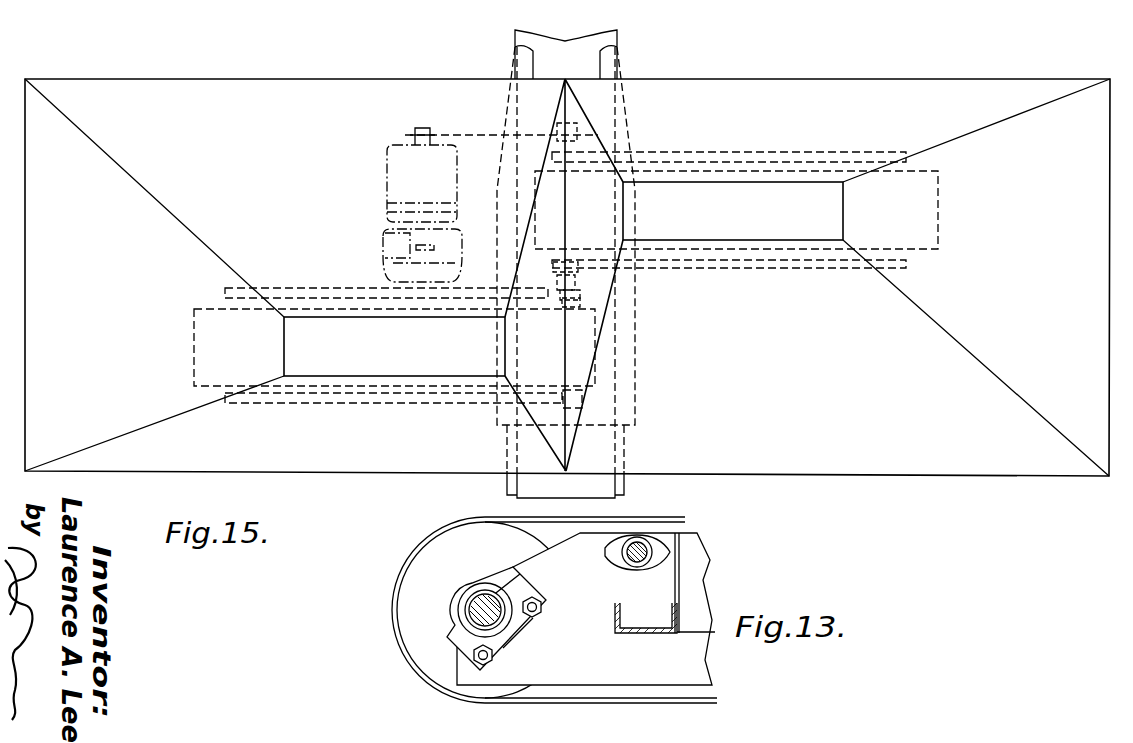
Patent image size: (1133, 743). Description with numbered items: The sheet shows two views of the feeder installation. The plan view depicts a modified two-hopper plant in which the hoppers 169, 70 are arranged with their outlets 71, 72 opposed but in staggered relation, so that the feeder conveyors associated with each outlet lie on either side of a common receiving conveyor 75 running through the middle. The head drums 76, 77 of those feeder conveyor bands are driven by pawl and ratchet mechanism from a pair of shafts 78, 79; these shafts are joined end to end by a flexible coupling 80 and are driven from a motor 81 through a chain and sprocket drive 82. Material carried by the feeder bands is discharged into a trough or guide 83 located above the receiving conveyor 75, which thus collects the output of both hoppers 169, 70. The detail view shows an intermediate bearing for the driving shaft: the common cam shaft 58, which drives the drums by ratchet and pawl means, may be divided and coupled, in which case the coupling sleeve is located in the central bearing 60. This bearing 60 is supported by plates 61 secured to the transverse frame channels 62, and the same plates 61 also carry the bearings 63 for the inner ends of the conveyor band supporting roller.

In FIG. 15, the hopper 169 is at (275, 100).
In FIG. 15, the hopper 70 is at (697, 108).
In FIG. 15, the outlet 71 is at (505, 350).
In FIG. 15, the outlet 72 is at (623, 209).
In FIG. 15, the common receiving conveyor 75 is at (577, 71).
In FIG. 15, the head drum 76 is at (582, 345).
In FIG. 15, the head drum 77 is at (553, 207).
In FIG. 15, the shaft 78 is at (585, 305).
In FIG. 15, the shaft 79 is at (578, 262).
In FIG. 15, the flexible coupling 80 is at (580, 278).
In FIG. 15, the motor 81 is at (410, 183).
In FIG. 15, the chain and sprocket drive 82 is at (466, 134).
In FIG. 15, the trough or guide 83 is at (522, 65).
In FIG. 13, the cam shaft 58 is at (470, 608).
In FIG. 13, the central bearing 60 is at (462, 590).
In FIG. 13, the plate 61 is at (564, 675).
In FIG. 13, the transverse frame channel 62 is at (650, 633).
In FIG. 13, the bearing 63 is at (625, 570).